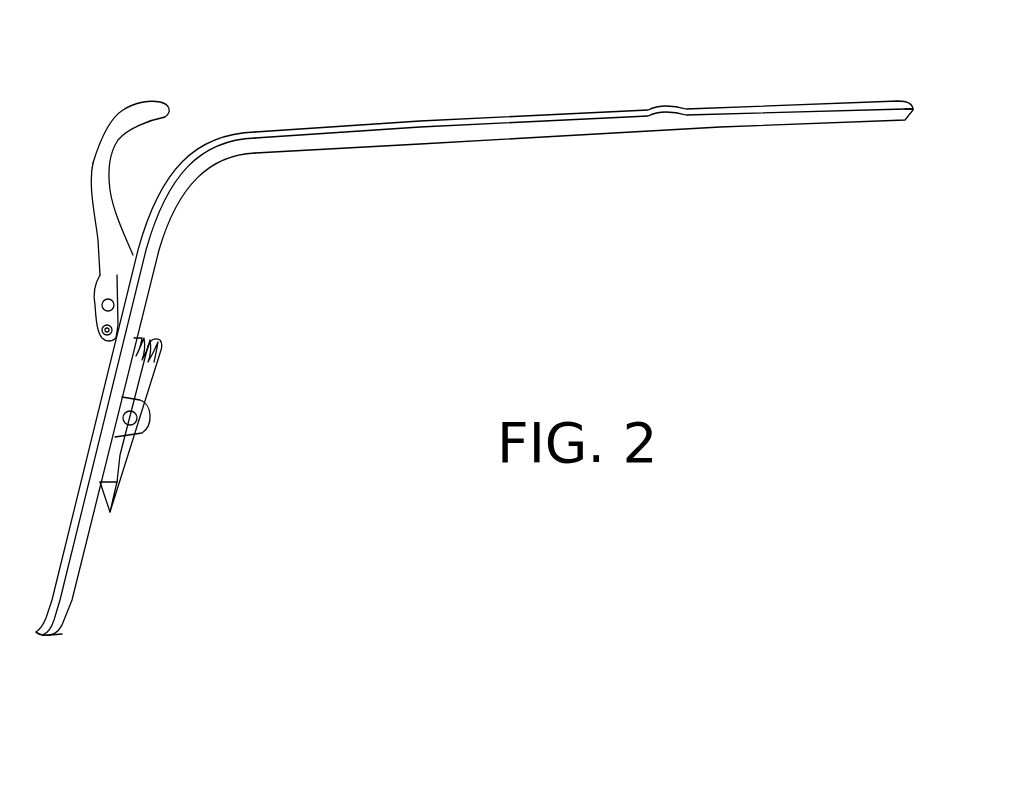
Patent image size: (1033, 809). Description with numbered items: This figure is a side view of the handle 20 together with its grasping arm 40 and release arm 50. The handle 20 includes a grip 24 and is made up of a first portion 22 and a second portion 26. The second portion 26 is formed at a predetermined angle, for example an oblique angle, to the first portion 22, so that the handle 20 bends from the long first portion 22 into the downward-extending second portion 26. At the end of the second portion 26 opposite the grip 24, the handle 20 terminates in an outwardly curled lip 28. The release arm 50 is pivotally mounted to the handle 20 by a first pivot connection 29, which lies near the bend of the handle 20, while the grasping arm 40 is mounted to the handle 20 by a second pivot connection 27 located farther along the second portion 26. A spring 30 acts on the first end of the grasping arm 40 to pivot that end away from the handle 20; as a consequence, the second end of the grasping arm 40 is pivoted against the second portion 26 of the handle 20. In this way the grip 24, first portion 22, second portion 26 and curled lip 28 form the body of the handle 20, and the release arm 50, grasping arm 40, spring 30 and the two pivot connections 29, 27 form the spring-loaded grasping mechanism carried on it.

The handle 20 is at (474, 366).
The first portion 22 is at (378, 146).
The grip 24 is at (760, 130).
The second portion 26 is at (93, 549).
The second pivot connection 27 is at (148, 420).
The outwardly curled lip 28 is at (40, 634).
The first pivot connection 29 is at (92, 290).
The spring 30 is at (151, 331).
The grasping arm 40 is at (162, 381).
The release arm 50 is at (130, 98).